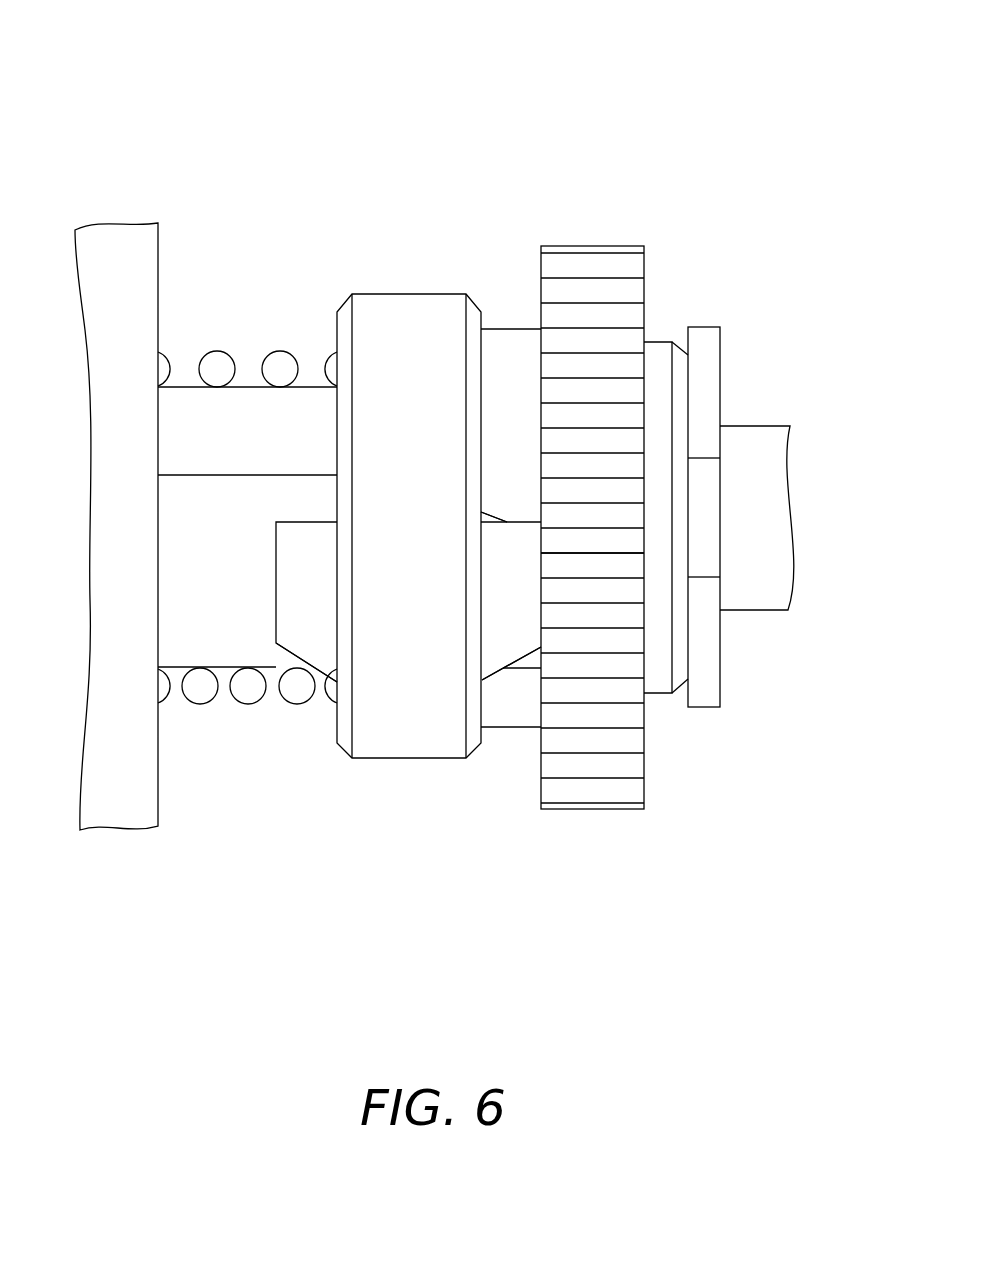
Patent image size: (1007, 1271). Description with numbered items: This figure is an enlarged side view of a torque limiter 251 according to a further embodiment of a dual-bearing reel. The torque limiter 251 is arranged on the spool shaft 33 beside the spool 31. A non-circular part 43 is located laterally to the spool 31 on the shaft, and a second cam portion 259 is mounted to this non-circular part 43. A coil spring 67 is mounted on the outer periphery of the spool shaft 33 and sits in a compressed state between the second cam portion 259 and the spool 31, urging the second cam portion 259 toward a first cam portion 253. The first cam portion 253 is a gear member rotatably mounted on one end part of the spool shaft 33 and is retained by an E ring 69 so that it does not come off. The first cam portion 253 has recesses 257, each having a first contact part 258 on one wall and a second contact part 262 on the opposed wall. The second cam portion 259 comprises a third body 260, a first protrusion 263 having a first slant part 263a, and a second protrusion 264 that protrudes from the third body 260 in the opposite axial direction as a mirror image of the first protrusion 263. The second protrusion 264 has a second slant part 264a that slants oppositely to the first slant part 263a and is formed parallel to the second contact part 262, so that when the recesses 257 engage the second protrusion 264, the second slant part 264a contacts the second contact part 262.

The spool 31 is at (127, 248).
The spool shaft 33 is at (768, 412).
The non-circular part 43 is at (183, 610).
The coil spring 67 is at (220, 335).
The E ring 69 is at (708, 320).
The torque limiter 251 is at (470, 168).
The first cam portion 253 is at (602, 232).
The recess 257 is at (541, 574).
The first contact part 258 is at (481, 515).
The second cam portion 259 is at (583, 972).
The third body 260 is at (388, 733).
The second contact part 262 is at (467, 760).
The first protrusion 263 is at (285, 593).
The first slant part 263a is at (290, 652).
The second protrusion 264 is at (517, 612).
The second slant part 264a is at (535, 672).